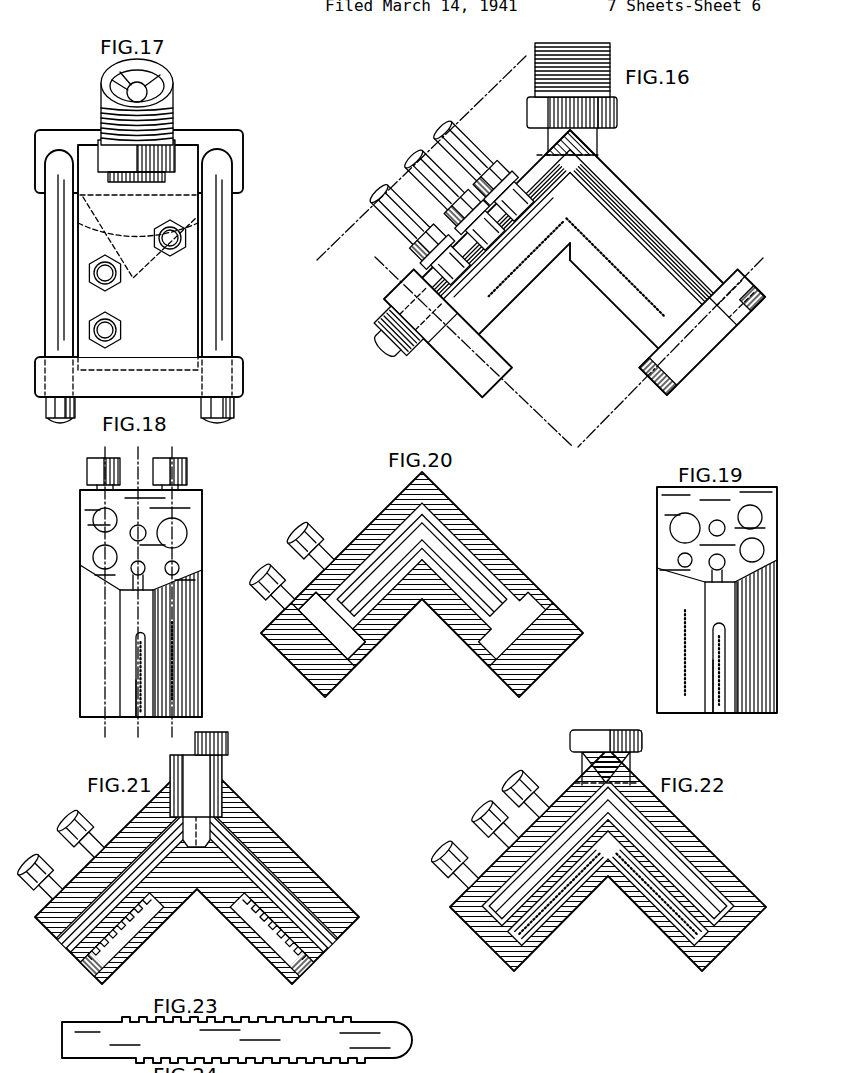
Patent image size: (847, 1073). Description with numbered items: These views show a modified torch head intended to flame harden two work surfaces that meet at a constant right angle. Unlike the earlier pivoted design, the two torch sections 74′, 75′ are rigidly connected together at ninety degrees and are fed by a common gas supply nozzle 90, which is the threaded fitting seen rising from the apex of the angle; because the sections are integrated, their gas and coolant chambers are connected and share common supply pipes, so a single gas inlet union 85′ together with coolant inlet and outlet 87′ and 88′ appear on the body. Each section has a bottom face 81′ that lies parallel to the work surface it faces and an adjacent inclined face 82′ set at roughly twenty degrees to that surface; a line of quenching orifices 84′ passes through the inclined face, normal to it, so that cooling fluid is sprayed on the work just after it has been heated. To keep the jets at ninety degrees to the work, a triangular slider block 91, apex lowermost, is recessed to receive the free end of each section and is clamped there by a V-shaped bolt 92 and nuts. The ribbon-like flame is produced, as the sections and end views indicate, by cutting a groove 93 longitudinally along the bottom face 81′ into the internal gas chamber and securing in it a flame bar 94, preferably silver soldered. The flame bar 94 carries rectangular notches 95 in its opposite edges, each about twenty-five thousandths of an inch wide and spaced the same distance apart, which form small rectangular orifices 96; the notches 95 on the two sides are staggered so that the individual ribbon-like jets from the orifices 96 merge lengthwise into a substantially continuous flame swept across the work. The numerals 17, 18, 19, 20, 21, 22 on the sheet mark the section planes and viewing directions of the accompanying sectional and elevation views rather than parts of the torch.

In FIG. 16, the section line 17- 17 is at (522, 57).
In FIG. 16, the section line 18- 18 is at (372, 261).
In FIG. 16, the section line 19- 19 is at (755, 261).
In FIG. 18, the section line 20- 20 is at (99, 456).
In FIG. 18, the section line 21- 21 is at (136, 456).
In FIG. 18, the section line 22- 22 is at (169, 456).
In FIG. 16, the torch section 74′ is at (477, 313).
In FIG. 18, the torch section 74′ is at (93, 558).
In FIG. 20, the torch section 74′ is at (383, 528).
In FIG. 21, the torch section 74′ is at (53, 927).
In FIG. 22, the torch section 74′ is at (450, 909).
In FIG. 16, the torch section 75′ is at (655, 303).
In FIG. 19, the torch section 75′ is at (657, 575).
In FIG. 20, the torch section 75′ is at (507, 563).
In FIG. 21, the torch section 75′ is at (268, 830).
In FIG. 22, the torch section 75′ is at (688, 826).
In FIG. 18, the bottom face 81′ is at (148, 611).
In FIG. 19, the bottom face 81′ is at (715, 596).
In FIG. 21, the bottom face 81′ is at (44, 867).
In FIG. 18, the inclined face 82′ is at (197, 642).
In FIG. 19, the inclined face 82′ is at (670, 605).
In FIG. 18, the quenching orifices 84′ is at (173, 687).
In FIG. 19, the quenching orifices 84′ is at (685, 623).
In FIG. 20, the quenching orifices 84′ is at (296, 688).
In FIG. 22, the quenching orifices 84′ is at (540, 950).
In FIG. 16, the gas inlet union 85′ is at (510, 162).
In FIG. 22, the gas inlet union 85′ is at (520, 792).
In FIG. 16, the coolant inlet 87′ is at (470, 278).
In FIG. 20, the coolant inlet 87′ is at (266, 583).
In FIG. 22, the coolant inlet 87′ is at (453, 866).
In FIG. 16, the coolant outlet 88′ is at (443, 213).
In FIG. 20, the coolant outlet 88′ is at (317, 534).
In FIG. 21, the coolant outlet 88′ is at (82, 836).
In FIG. 22, the coolant outlet 88′ is at (490, 833).
In FIG. 17, the gas supply nozzle 90 is at (174, 102).
In FIG. 16, the gas supply nozzle 90 is at (618, 115).
In FIG. 21, the gas supply nozzle 90 is at (223, 742).
In FIG. 22, the gas supply nozzle 90 is at (572, 741).
In FIG. 17, the slider block 91 is at (163, 377).
In FIG. 16, the slider block 91 is at (477, 398).
In FIG. 17, the V-shaped bolt 92 is at (228, 298).
In FIG. 16, the V-shaped bolt 92 is at (570, 251).
In FIG. 18, the groove 93 is at (137, 633).
In FIG. 18, the flame bar 94 is at (140, 654).
In FIG. 19, the flame bar 94 is at (720, 703).
In FIG. 21, the flame bar 94 is at (120, 975).
In FIG. 23, the flame bar 94 is at (410, 1036).
In FIG. 23, the rectangular notches 95 is at (287, 1020).
In FIG. 18, the rectangular orifices 96 is at (137, 683).
In FIG. 19, the rectangular orifices 96 is at (713, 667).